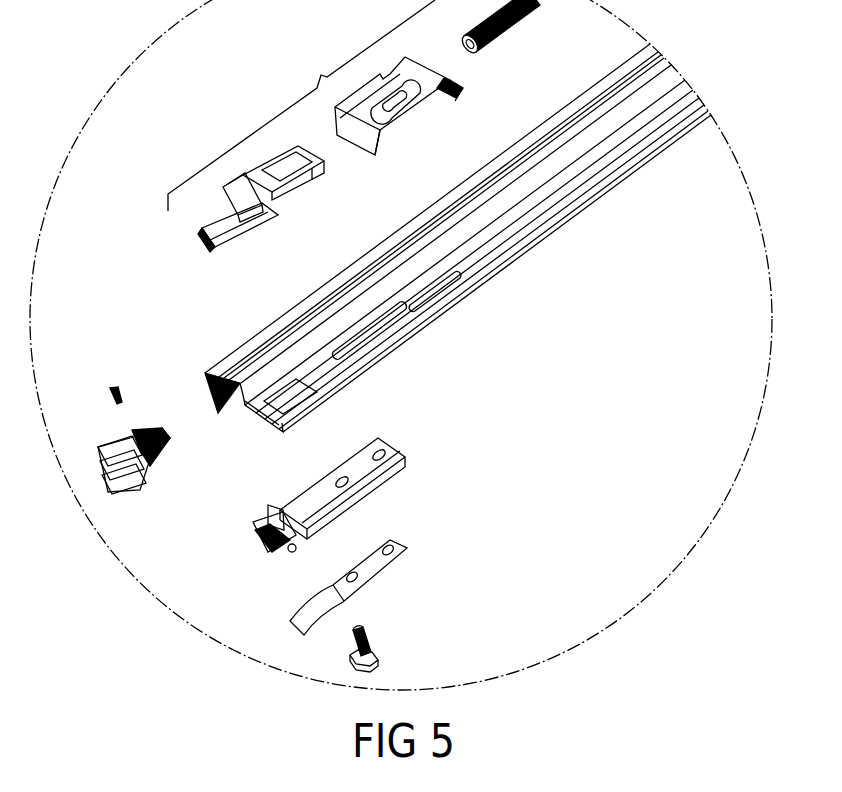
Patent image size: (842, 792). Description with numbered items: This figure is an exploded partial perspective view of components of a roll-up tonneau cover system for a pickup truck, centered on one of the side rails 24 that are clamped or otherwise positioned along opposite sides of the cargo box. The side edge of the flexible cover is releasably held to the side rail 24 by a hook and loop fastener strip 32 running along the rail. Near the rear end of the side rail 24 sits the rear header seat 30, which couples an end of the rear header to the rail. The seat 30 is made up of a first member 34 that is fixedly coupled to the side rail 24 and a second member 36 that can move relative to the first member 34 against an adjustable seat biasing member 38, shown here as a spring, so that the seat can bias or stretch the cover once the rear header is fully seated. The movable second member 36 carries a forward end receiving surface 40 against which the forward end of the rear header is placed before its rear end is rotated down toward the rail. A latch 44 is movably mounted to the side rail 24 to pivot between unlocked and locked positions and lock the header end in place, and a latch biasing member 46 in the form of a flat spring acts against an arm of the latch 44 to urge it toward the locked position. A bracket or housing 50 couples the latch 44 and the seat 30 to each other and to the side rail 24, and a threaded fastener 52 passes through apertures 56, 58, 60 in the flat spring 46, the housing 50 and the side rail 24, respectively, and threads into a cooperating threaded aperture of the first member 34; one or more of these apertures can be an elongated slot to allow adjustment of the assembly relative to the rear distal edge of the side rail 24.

The side rail 24 is at (458, 235).
The rear header seat 30 is at (301, 105).
The hook and loop fastener strip 32 is at (633, 72).
The first member 34 is at (403, 125).
The second member 36 is at (298, 200).
The seat biasing member 38 is at (505, 37).
The forward end receiving surface 40 is at (262, 225).
The latch 44 is at (260, 500).
The latch biasing member 46 is at (367, 580).
The housing 50 is at (365, 485).
The threaded fastener 52 is at (370, 645).
The aperture 56 is at (398, 542).
The aperture 58 is at (386, 453).
The aperture 60 is at (396, 321).